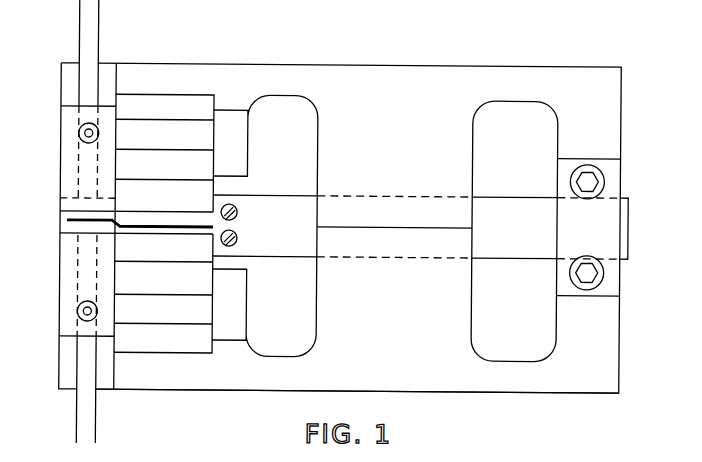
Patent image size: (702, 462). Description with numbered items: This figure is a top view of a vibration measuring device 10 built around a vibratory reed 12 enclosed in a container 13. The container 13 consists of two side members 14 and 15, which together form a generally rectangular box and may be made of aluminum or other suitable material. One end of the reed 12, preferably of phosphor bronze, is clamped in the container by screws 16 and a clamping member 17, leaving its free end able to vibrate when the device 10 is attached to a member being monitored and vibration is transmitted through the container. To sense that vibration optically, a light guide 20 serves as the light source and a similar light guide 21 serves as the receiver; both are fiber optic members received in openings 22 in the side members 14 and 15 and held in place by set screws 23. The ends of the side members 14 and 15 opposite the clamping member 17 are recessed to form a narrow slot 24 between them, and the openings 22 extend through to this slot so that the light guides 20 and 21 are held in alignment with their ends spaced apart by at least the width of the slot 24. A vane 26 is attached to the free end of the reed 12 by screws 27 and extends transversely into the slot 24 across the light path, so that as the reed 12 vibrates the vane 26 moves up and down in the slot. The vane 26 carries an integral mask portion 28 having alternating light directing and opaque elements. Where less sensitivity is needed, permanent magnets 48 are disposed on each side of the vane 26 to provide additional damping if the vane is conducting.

The vibration measuring device 10 is at (381, 48).
The vibratory reed 12 is at (517, 208).
The container 13 is at (571, 66).
The side member 14 is at (296, 66).
The side member 15 is at (563, 386).
The screws 16 is at (605, 177).
The clamping member 17 is at (574, 221).
The light guide 20 is at (78, 402).
The light guide 21 is at (78, 22).
The openings 22 is at (77, 165).
The set screws 23 is at (78, 133).
The slot 24 is at (63, 228).
The vane 26 is at (163, 225).
The screws 27 is at (240, 235).
The mask portion 28 is at (67, 221).
The permanent magnets 48 is at (172, 160).